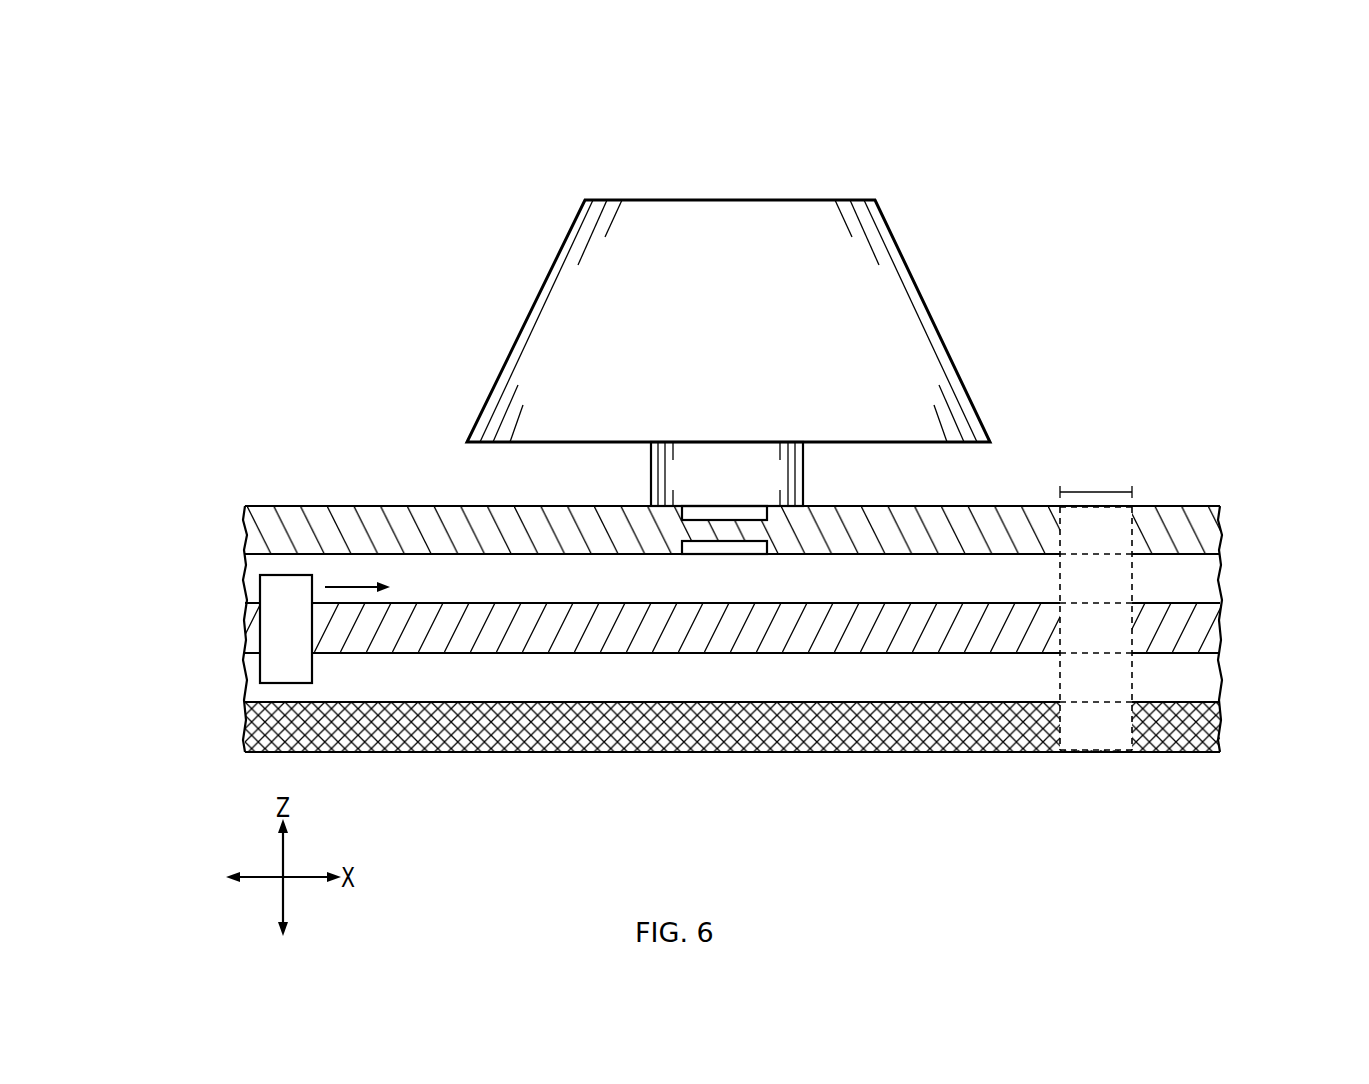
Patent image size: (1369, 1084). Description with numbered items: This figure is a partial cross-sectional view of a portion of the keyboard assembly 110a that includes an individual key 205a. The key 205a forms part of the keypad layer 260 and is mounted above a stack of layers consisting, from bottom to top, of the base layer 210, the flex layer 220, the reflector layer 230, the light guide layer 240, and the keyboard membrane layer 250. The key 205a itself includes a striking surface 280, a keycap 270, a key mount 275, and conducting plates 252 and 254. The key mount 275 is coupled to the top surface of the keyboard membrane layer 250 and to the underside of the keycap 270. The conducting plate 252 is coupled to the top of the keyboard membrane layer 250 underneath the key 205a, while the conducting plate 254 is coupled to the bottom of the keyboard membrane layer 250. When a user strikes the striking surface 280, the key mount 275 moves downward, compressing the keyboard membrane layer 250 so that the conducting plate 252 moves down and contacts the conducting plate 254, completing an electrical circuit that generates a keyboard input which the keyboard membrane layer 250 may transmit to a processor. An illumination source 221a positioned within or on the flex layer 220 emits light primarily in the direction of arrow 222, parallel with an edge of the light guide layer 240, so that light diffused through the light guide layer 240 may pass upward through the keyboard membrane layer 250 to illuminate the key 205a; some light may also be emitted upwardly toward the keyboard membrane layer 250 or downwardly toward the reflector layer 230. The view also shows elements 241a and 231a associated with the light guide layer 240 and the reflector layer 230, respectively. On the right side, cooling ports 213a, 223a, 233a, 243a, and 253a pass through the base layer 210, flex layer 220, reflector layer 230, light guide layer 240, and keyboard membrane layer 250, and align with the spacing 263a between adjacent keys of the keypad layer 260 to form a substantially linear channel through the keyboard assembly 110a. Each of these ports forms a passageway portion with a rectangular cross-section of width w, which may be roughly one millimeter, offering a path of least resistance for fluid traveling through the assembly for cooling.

The keyboard assembly 110a is at (167, 197).
The key 205a is at (509, 150).
The base layer 210 is at (1234, 735).
The cooling port 213a is at (1122, 740).
The flex layer 220 is at (1234, 687).
The illumination source 221a is at (310, 641).
The arrow 222 is at (350, 586).
The cooling port 223a is at (1122, 691).
The reflector layer 230 is at (1234, 639).
The conductive trace 231a is at (284, 648).
The cooling port 233a is at (1122, 642).
The light guide layer 240 is at (1234, 588).
The conductive element 241a is at (262, 583).
The cooling port 243a is at (1122, 593).
The keyboard membrane layer 250 is at (1234, 533).
The conducting plate 252 is at (742, 511).
The cooling port 253a is at (1122, 543).
The conducting plate 254 is at (732, 547).
The keypad layer 260 is at (1218, 202).
The spacing 263a is at (1137, 441).
The keycap 270 is at (550, 270).
The key mount 275 is at (651, 470).
The striking surface 280 is at (764, 199).